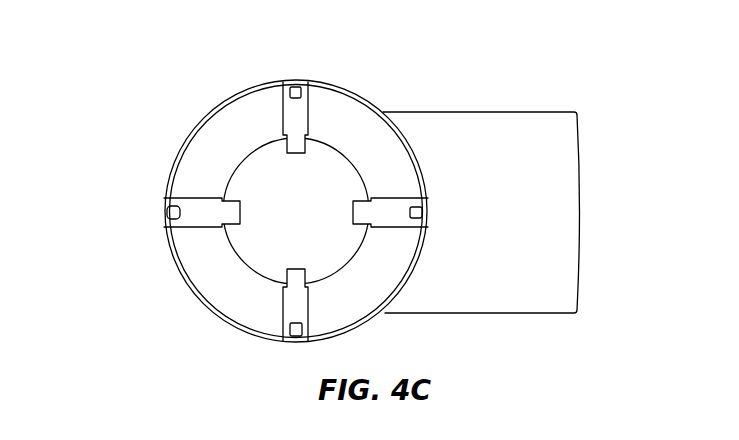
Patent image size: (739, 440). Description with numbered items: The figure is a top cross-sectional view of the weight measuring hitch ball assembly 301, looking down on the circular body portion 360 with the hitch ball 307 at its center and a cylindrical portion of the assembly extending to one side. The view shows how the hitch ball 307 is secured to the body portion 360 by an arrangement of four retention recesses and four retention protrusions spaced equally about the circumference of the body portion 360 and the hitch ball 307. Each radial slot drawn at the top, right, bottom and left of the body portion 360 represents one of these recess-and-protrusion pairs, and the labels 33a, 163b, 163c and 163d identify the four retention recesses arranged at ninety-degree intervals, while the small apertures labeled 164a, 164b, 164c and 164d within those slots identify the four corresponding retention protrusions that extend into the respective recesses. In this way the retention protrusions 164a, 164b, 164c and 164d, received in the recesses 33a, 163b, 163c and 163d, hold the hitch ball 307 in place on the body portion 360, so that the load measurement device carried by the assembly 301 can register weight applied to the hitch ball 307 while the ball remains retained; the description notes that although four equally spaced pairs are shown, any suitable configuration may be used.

The weight measuring hitch ball assembly 301 is at (182, 64).
The body portion 360 is at (215, 136).
The hitch ball 307 is at (246, 244).
The radial slot 33a is at (232, 197).
The radial slot 163b is at (362, 197).
The radial slot 163c is at (308, 146).
The radial slot 163d is at (284, 278).
The slot aperture 164a is at (168, 224).
The slot aperture 164b is at (430, 221).
The slot aperture 164c is at (283, 86).
The slot aperture 164d is at (283, 340).